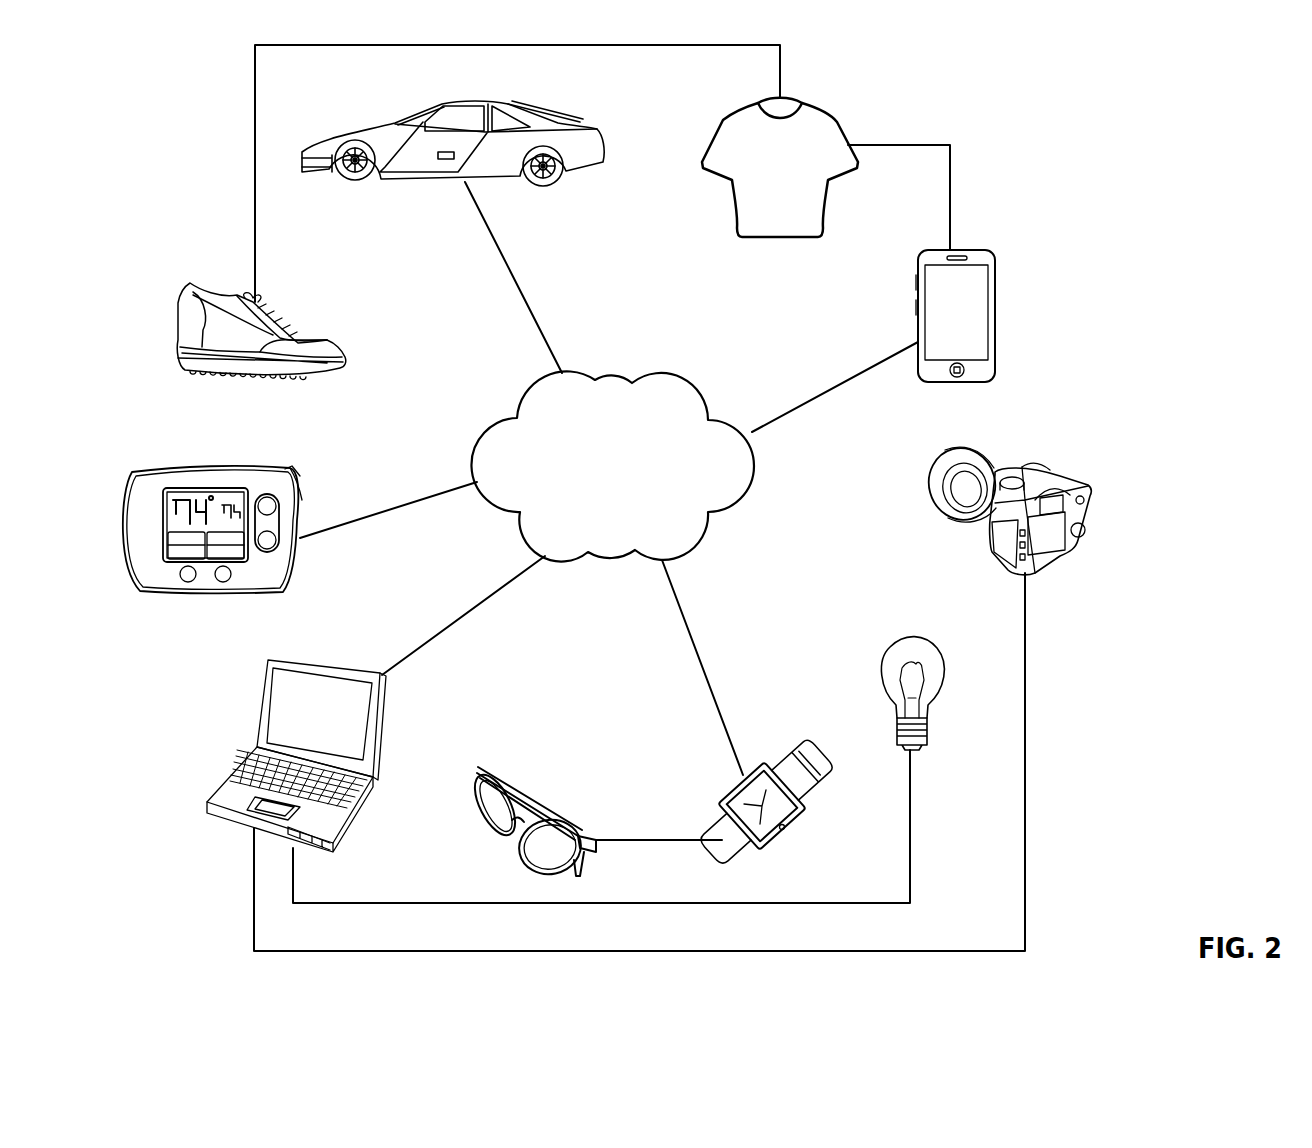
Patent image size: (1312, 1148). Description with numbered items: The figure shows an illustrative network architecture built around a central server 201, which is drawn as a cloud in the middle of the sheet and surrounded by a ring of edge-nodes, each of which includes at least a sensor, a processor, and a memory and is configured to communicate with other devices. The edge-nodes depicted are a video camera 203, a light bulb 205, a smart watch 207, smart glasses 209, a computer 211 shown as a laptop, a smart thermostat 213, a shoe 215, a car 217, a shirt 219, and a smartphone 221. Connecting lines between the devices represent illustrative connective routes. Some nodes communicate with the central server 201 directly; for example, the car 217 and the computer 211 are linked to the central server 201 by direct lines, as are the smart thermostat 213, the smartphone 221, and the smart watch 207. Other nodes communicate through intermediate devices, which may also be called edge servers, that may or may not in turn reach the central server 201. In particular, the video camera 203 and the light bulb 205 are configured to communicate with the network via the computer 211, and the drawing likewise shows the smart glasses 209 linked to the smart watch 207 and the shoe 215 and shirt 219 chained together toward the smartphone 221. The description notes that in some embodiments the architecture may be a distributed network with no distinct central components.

The central server 201 is at (615, 373).
The video camera 203 is at (1037, 470).
The light bulb 205 is at (912, 642).
The smart watch 207 is at (795, 758).
The smart glasses 209 is at (525, 795).
The computer 211 is at (314, 662).
The smart thermostat 213 is at (197, 463).
The shoe 215 is at (192, 290).
The car 217 is at (498, 106).
The shirt 219 is at (822, 112).
The smartphone 221 is at (972, 250).